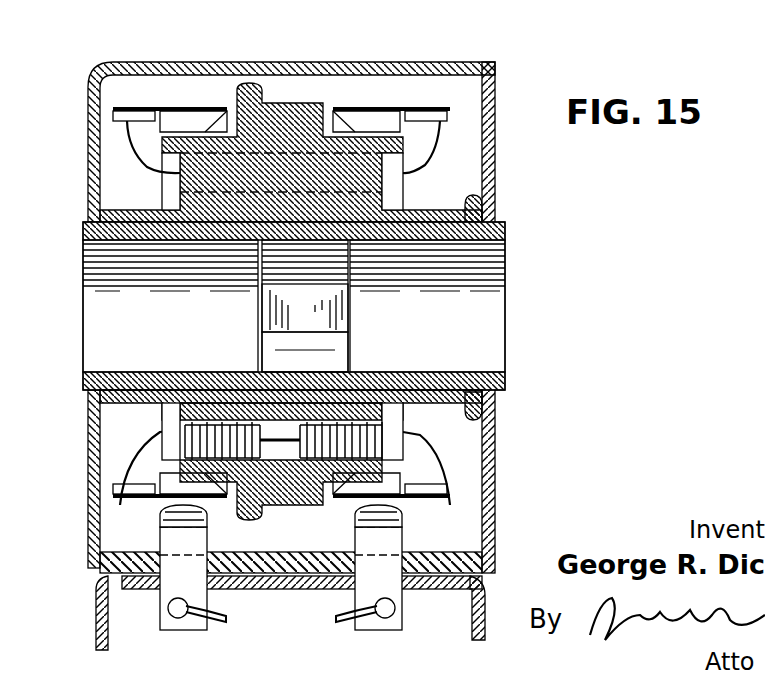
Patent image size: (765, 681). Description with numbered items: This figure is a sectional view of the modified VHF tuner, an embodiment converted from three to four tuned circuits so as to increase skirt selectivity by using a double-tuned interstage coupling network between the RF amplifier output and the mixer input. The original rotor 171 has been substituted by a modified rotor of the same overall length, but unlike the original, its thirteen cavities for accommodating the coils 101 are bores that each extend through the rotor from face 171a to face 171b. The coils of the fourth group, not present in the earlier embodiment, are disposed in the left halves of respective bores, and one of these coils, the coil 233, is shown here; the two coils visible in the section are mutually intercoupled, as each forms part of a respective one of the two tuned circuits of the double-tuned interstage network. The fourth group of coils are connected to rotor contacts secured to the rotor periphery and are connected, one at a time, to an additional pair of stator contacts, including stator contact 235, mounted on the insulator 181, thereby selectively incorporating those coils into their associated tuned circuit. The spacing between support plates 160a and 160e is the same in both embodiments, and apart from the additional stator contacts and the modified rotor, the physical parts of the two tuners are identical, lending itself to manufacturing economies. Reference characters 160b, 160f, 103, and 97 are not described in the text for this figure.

The support plate 160a is at (90, 120).
The housing top wall 160b is at (209, 62).
The support plate 160e is at (495, 90).
The housing mounting flange 160f is at (467, 618).
The rotor 171 is at (296, 108).
The rotor face 171a is at (403, 200).
The rotor face 171b is at (165, 191).
The contact bracket 103 is at (365, 110).
The coil 233 is at (225, 398).
The coils 101 is at (387, 437).
The stator contact 235 is at (163, 522).
The terminal 97 is at (402, 522).
The insulator 181 is at (495, 560).